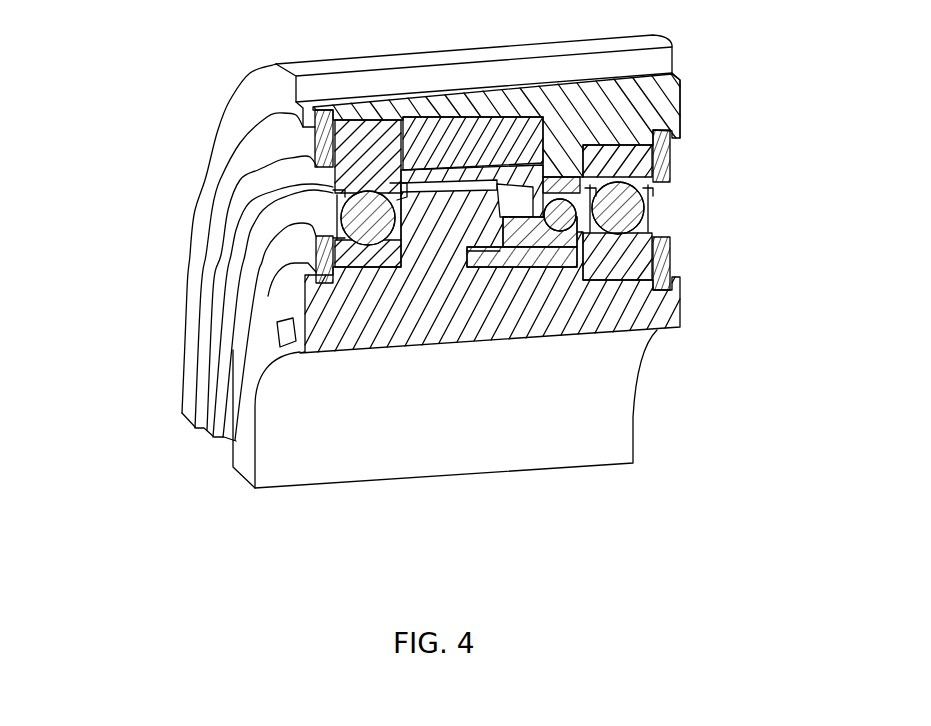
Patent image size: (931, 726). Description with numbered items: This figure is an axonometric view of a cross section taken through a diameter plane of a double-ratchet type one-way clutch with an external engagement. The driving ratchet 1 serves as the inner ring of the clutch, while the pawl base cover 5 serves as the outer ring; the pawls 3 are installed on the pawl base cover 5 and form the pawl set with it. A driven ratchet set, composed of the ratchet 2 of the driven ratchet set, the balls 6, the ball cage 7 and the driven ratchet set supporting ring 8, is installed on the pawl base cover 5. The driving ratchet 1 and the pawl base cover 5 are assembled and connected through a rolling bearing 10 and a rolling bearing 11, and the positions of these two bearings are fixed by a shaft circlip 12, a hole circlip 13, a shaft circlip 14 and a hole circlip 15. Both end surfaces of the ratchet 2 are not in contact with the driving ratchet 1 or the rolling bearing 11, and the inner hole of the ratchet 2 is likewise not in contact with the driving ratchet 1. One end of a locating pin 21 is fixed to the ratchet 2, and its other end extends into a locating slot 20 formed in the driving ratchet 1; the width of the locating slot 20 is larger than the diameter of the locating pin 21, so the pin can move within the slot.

The driving ratchet 1 is at (257, 375).
The ratchet of the driven ratchet set 2 is at (575, 252).
The pawls 3 is at (418, 147).
The pawl base cover 5 is at (260, 93).
The balls 6 is at (612, 262).
The ball cage 7 is at (590, 155).
The driven ratchet set supporting ring 8 is at (560, 192).
The rolling bearing 10 is at (296, 177).
The rolling bearing 11 is at (652, 212).
The shaft circlip 12 is at (293, 248).
The hole circlip 13 is at (270, 142).
The shaft circlip 14 is at (672, 262).
The hole circlip 15 is at (672, 165).
The locating slot 20 is at (468, 268).
The locating pin 21 is at (505, 258).